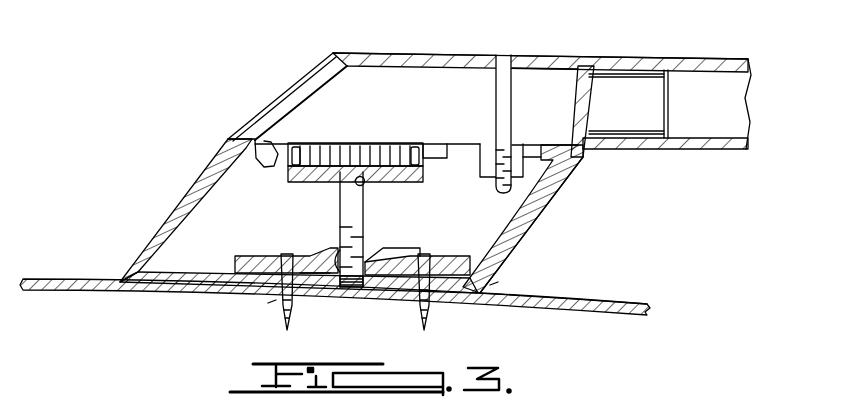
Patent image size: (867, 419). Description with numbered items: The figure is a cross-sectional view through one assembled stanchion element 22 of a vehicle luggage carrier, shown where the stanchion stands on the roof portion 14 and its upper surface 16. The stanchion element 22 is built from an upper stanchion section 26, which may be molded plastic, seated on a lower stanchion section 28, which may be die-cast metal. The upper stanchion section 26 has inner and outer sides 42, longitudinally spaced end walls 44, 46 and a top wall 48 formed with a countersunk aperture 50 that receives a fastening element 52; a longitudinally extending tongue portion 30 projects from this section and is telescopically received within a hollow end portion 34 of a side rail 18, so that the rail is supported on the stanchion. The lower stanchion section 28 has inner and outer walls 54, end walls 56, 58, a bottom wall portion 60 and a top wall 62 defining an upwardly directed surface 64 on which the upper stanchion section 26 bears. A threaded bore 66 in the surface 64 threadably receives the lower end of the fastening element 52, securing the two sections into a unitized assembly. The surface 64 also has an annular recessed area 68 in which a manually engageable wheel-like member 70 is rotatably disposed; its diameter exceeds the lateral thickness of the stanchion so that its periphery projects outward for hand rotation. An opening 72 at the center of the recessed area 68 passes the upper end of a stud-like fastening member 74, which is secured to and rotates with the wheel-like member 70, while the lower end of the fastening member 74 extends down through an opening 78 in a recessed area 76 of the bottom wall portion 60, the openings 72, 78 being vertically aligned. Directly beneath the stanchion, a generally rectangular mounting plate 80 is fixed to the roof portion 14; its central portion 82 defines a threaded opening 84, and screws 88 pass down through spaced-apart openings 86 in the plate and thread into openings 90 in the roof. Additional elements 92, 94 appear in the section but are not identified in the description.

The roof portion 14 is at (640, 306).
The upper surface 16 is at (580, 296).
The side rail 18 is at (708, 63).
The stanchion element 22 is at (235, 118).
The upper stanchion section 26 is at (362, 51).
The lower stanchion section 28 is at (146, 247).
The tongue portion 30 is at (655, 109).
The hollow end portion 34 is at (700, 146).
The inner and outer sides 42 is at (383, 88).
The end wall 44 is at (288, 91).
The end wall 46 is at (587, 96).
The top wall 48 is at (458, 63).
The aperture 50 is at (520, 64).
The fastening element 52 is at (496, 96).
The inner and outer walls 54 is at (525, 223).
The end wall 56 is at (178, 197).
The end wall 58 is at (552, 192).
The bottom wall portion 60 is at (193, 270).
The top wall 62 is at (443, 158).
The upwardly directed surface 64 is at (471, 150).
The threaded bore 66 is at (515, 150).
The annular recessed area 68 is at (297, 148).
The wheel-like member 70 is at (388, 147).
The opening 72 is at (364, 184).
The stud-like fastening member 74 is at (337, 213).
The recessed area 76 is at (400, 292).
The opening 78 is at (350, 288).
The mounting plate 80 is at (314, 290).
The central portion 82 is at (382, 262).
The threaded opening 84 is at (366, 290).
The openings 86 is at (284, 257).
The screws 88 is at (284, 318).
The openings 90 is at (272, 303).
The inner wall edge 92 is at (297, 115).
The clip 94 is at (266, 166).